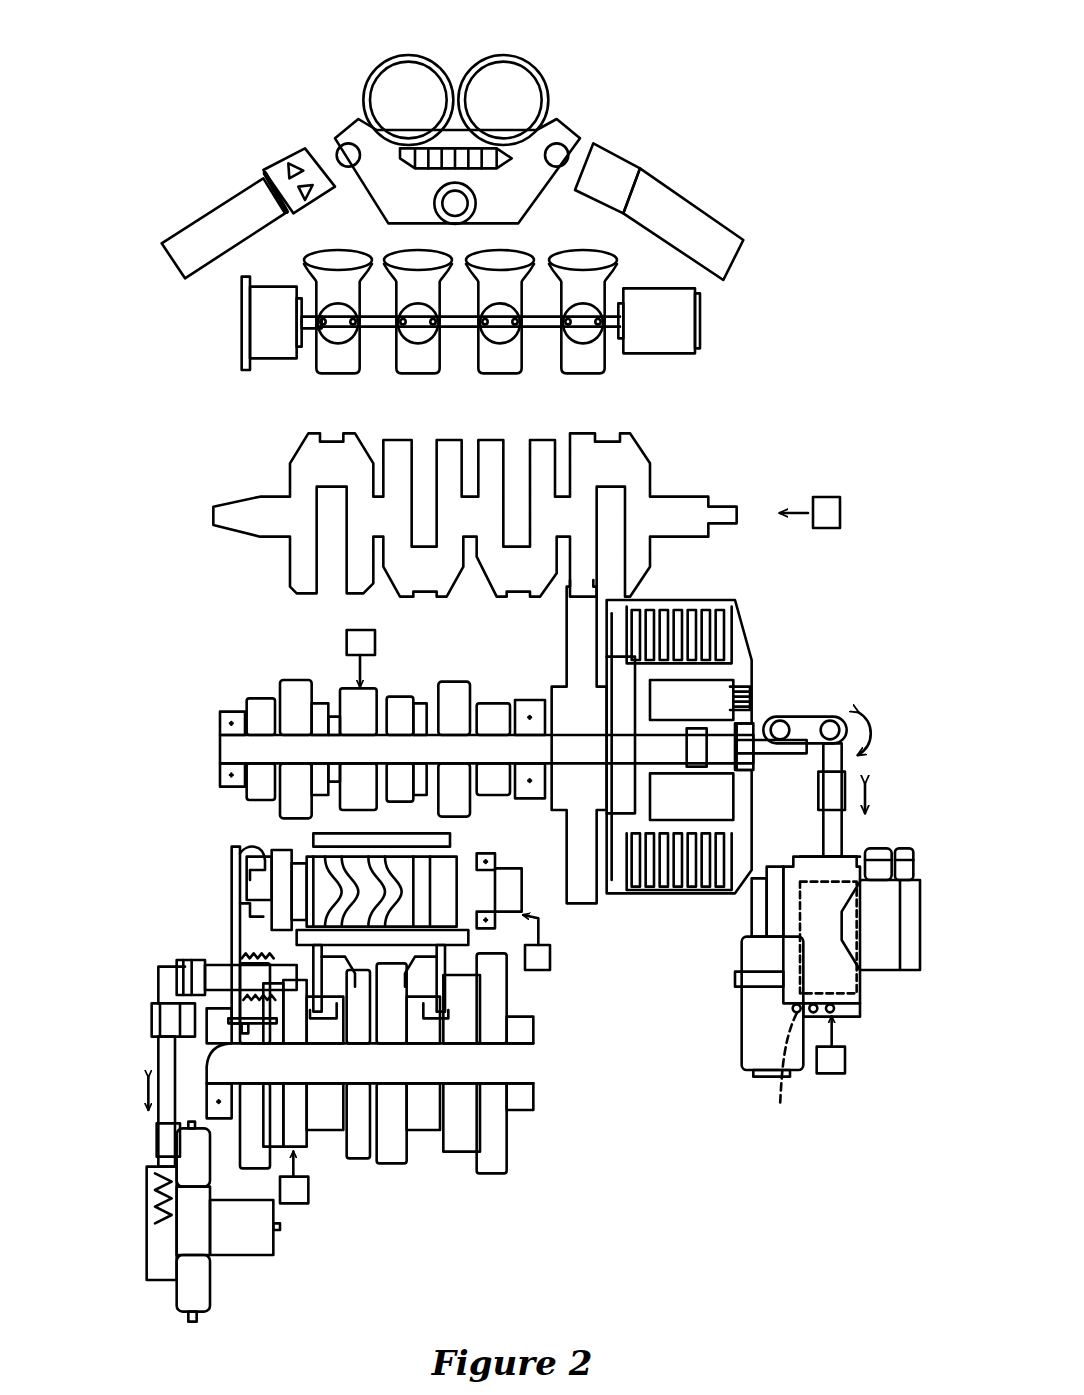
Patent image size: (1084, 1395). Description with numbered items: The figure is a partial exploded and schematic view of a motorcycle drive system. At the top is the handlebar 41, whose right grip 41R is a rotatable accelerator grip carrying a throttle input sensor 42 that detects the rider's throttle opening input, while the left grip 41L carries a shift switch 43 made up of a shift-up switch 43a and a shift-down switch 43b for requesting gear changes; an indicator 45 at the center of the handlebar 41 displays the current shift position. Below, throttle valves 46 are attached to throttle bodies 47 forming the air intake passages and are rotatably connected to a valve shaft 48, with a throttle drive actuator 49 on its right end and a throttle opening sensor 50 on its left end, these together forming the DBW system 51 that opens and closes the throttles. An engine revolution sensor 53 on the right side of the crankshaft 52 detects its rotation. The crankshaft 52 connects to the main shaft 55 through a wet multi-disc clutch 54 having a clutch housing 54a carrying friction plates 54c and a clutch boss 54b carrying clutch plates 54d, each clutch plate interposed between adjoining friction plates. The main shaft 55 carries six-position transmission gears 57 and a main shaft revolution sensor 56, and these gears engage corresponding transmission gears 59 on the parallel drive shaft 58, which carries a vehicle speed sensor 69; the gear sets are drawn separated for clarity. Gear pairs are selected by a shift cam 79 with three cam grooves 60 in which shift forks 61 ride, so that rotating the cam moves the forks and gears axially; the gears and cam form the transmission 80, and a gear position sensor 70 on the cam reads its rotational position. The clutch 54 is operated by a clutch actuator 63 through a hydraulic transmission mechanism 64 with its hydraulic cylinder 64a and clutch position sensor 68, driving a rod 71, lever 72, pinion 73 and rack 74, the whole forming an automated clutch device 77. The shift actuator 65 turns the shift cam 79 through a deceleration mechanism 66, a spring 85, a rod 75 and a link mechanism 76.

The handlebar 41 is at (479, 131).
The left grip 41L is at (208, 213).
The right grip 41R is at (698, 214).
The throttle input sensor 42 is at (628, 152).
The shift switch 43 is at (299, 133).
The shift-up switch 43a is at (255, 144).
The shift-down switch 43b is at (290, 223).
The indicator 45 is at (455, 87).
The throttle valves 46 is at (460, 274).
The throttle bodies 47 is at (460, 291).
The valve shaft 48 is at (470, 363).
The throttle drive actuator 49 is at (701, 323).
The throttle opening sensor 50 is at (282, 340).
The DBW (drive by wire) system 51 is at (759, 287).
The crankshaft 52 is at (474, 487).
The engine revolution sensor 53 is at (834, 495).
The clutch 54 is at (697, 738).
The clutch housing 54a is at (678, 721).
The clutch boss 54b is at (567, 741).
The friction plates 54c is at (715, 720).
The clutch plates 54d is at (748, 632).
The main shaft 55 is at (452, 725).
The main shaft revolution sensor 56 is at (393, 644).
The transmission gears 57 is at (375, 710).
The drive shaft 58 is at (401, 1063).
The transmission gears 59 is at (445, 974).
The cam grooves 60 is at (397, 868).
The shift forks 61 is at (275, 884).
The clutch actuator 63 is at (744, 972).
The hydraulic transmission mechanism 64 is at (858, 951).
The hydraulic cylinder 64a is at (771, 1079).
The shift actuator 65 is at (252, 1261).
The deceleration mechanism 66 is at (154, 1222).
The clutch position sensor 68 is at (832, 1082).
The vehicle speed sensor 69 is at (323, 1178).
The gear position sensor 70 is at (564, 942).
The rod 71 is at (816, 799).
The lever 72 is at (846, 705).
The pinion 73 is at (804, 699).
The rack 74 is at (772, 771).
The rod 75 is at (155, 1067).
The link mechanism 76 is at (185, 935).
The automated clutch device 77 is at (884, 687).
The shift cam 79 is at (264, 929).
The transmission 80 is at (118, 842).
The spring 85 is at (120, 1205).